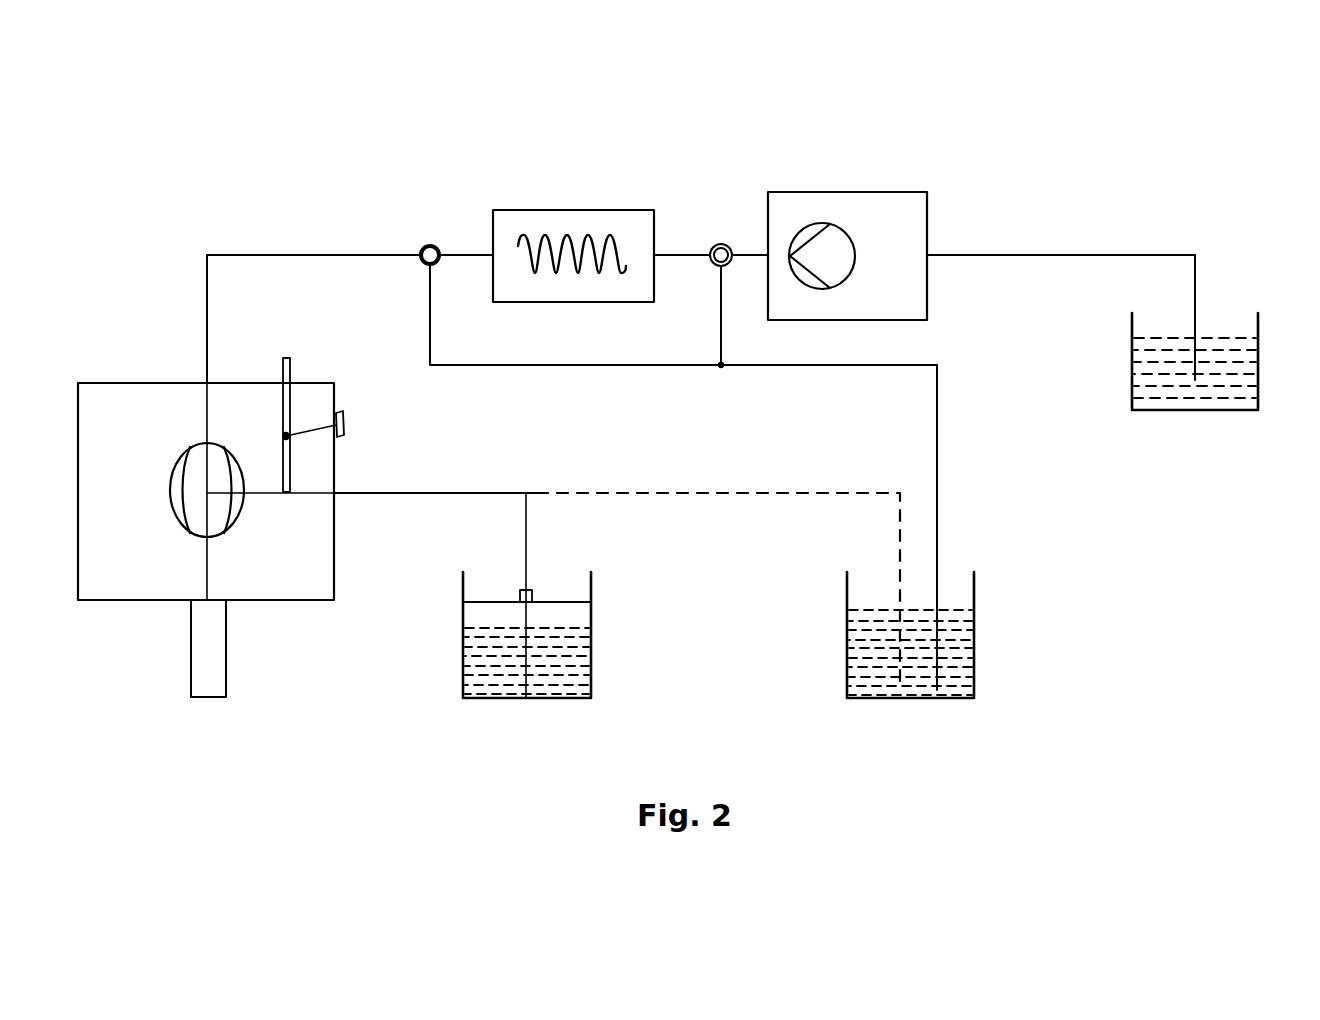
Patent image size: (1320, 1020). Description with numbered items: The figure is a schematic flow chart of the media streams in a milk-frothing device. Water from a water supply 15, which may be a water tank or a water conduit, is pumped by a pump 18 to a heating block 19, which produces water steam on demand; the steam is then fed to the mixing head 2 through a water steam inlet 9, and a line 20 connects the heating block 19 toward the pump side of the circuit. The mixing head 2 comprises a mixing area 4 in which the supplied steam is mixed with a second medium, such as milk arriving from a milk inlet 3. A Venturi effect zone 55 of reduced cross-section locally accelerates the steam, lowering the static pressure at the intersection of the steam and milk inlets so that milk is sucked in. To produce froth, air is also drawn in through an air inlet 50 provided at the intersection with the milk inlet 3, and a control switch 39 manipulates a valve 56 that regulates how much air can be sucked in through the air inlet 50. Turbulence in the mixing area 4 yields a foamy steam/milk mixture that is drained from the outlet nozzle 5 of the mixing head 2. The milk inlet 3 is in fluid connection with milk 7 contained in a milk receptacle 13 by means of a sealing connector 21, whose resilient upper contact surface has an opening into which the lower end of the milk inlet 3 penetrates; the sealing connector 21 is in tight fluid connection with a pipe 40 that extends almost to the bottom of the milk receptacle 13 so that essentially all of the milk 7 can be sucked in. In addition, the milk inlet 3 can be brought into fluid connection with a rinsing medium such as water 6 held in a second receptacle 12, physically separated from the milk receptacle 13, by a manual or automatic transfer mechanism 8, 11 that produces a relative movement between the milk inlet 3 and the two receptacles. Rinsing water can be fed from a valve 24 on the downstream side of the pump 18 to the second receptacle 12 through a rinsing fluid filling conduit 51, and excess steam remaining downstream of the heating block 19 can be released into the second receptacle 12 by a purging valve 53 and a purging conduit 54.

The mixing head 2 is at (78, 485).
The milk inlet 3 is at (468, 493).
The mixing area 4 is at (180, 491).
The outlet nozzle 5 is at (190, 648).
The water 6 is at (946, 640).
The milk 7 is at (564, 640).
The transfer mechanism 8 is at (718, 566).
The water steam inlet 9 is at (206, 341).
The transfer mechanism 11 is at (703, 493).
The second receptacle 12 is at (976, 677).
The milk receptacle 13 is at (592, 680).
The water supply 15 is at (1258, 364).
The pump 18 is at (844, 192).
The heating block 19 is at (568, 210).
The line 20 is at (677, 253).
The sealing connector 21 is at (533, 592).
The valve 24 is at (721, 244).
The control switch 39 is at (344, 426).
The pipe 40 is at (523, 680).
The air inlet 50 is at (290, 363).
The rinsing fluid filling conduit 51 is at (937, 409).
The purging valve 53 is at (424, 247).
The purging conduit 54 is at (608, 366).
The Venturi effect zone 55 is at (203, 501).
The valve 56 is at (284, 436).